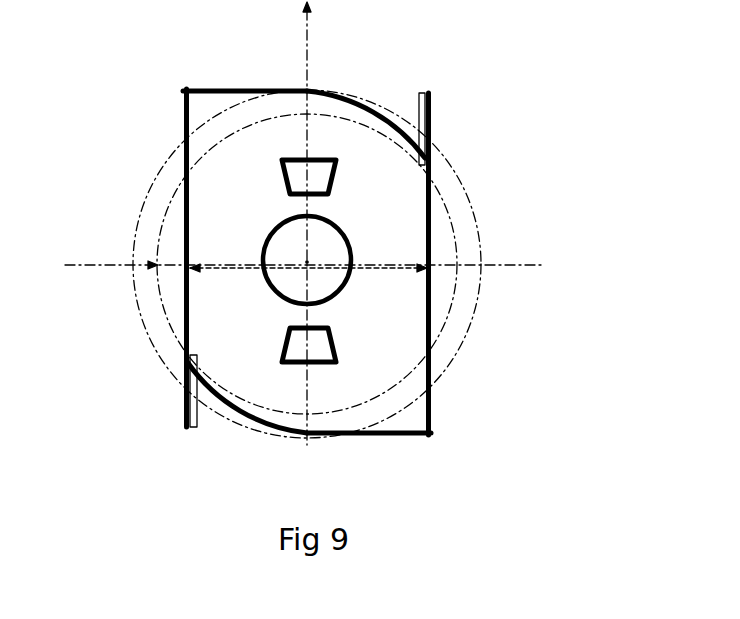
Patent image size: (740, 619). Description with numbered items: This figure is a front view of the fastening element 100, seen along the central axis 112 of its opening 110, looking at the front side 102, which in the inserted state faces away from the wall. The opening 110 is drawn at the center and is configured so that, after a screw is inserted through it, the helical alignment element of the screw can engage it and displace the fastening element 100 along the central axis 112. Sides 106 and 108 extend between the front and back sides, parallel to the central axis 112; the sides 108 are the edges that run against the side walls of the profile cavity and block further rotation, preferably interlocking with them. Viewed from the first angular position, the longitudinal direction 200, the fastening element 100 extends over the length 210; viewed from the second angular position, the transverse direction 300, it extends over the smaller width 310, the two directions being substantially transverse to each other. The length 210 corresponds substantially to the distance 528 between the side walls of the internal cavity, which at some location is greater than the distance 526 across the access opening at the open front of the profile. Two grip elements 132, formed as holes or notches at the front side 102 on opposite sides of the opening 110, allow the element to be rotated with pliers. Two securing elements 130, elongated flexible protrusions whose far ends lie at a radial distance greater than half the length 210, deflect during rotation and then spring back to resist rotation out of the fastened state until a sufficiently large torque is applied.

The fastening element 100 is at (320, 249).
The front side 102 is at (395, 303).
The side 106 is at (175, 189).
The side 108 is at (240, 80).
The opening 110 is at (322, 233).
The central axis 112 is at (308, 262).
The securing element 130 is at (441, 113).
The grip element 132 is at (287, 158).
The longitudinal direction 200 is at (331, 223).
The length 210 is at (341, 135).
The transverse direction 300 is at (305, 257).
The width 310 is at (215, 269).
The distance from the opening 526 is at (450, 311).
The distance between the side walls 528 is at (483, 278).